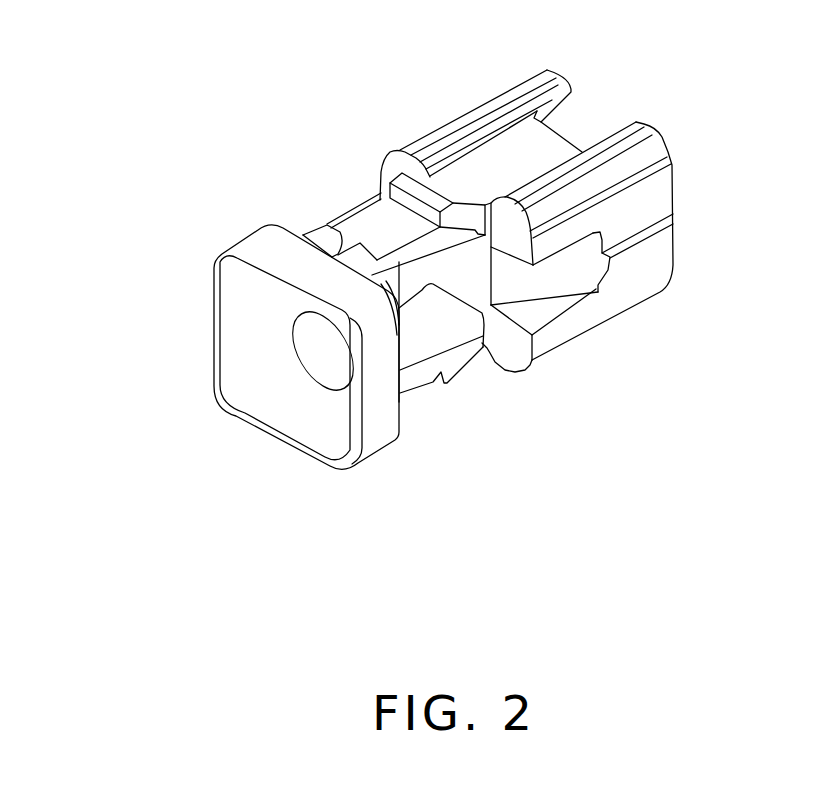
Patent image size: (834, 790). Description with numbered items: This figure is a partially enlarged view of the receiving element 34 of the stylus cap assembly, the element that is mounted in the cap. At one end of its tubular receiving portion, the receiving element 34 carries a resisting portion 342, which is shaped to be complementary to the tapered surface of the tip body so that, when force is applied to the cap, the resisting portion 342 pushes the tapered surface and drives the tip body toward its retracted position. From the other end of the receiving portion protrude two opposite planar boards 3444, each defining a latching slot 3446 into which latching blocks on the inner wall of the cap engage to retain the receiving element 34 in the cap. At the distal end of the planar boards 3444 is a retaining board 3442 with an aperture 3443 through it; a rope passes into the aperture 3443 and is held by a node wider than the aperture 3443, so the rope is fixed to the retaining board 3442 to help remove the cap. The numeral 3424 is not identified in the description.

The receiving element 34 is at (728, 60).
The resisting portion 342 is at (460, 115).
The main body 3424 is at (652, 266).
The retaining board 3442 is at (268, 250).
The aperture 3443 is at (327, 358).
The planar boards 3444 is at (332, 221).
The latching slots 3446 is at (388, 223).